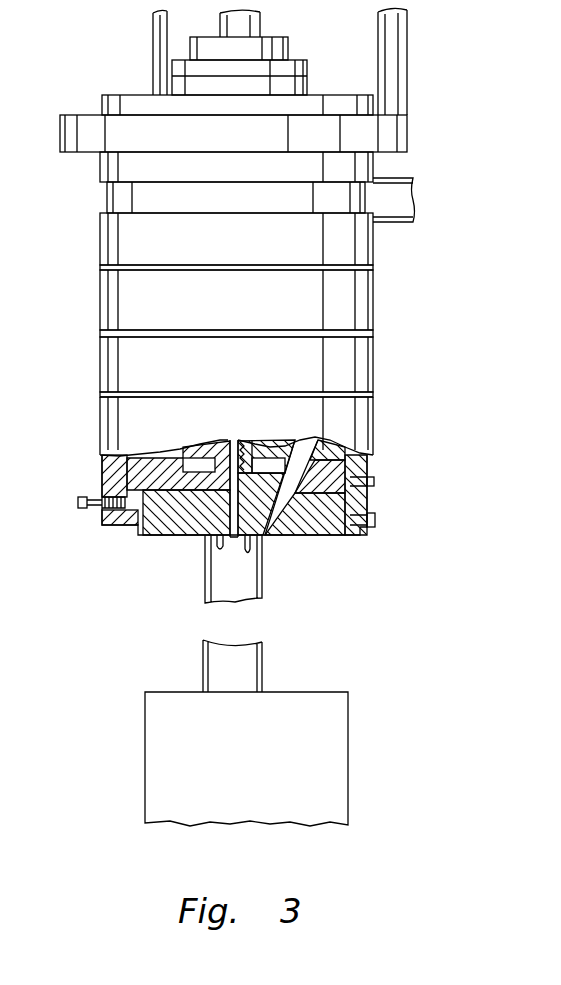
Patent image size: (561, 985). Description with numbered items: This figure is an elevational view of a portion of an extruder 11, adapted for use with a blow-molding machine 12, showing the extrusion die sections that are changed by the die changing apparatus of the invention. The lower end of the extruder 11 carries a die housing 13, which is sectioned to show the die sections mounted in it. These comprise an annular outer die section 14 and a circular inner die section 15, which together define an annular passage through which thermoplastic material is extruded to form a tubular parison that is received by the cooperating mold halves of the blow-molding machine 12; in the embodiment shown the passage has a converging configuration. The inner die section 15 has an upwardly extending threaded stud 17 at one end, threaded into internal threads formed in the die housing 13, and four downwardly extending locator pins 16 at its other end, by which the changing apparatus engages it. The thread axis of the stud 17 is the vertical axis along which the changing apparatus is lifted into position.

The extruder 11 is at (442, 382).
The blow-molding machine 12 is at (278, 763).
The die housing 13 is at (268, 450).
The annular outer die section 14 is at (192, 537).
The circular inner die section 15 is at (183, 497).
The locator pins 16 is at (223, 548).
The threaded stud 17 is at (226, 440).